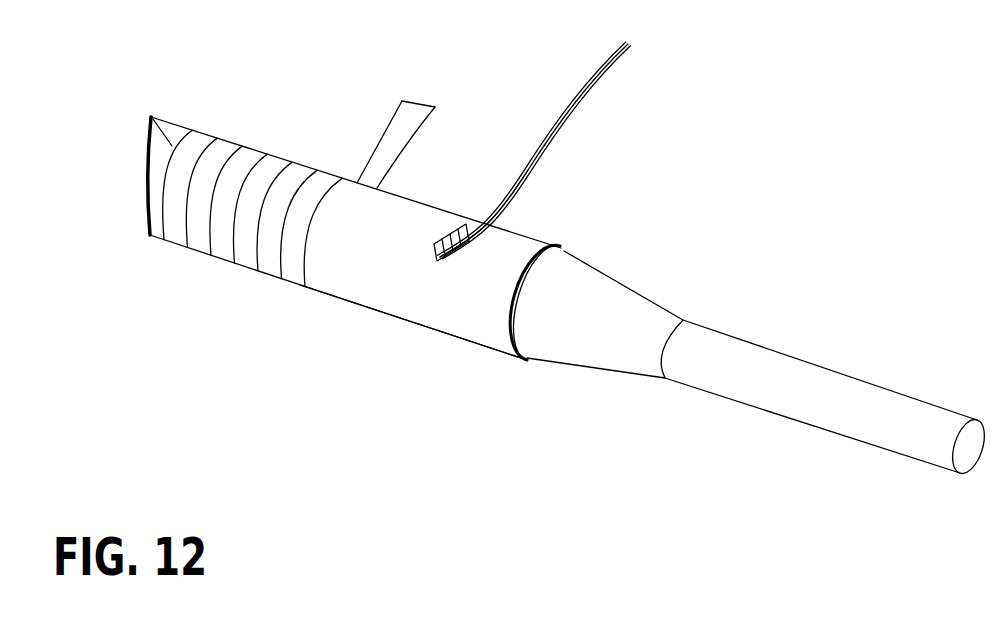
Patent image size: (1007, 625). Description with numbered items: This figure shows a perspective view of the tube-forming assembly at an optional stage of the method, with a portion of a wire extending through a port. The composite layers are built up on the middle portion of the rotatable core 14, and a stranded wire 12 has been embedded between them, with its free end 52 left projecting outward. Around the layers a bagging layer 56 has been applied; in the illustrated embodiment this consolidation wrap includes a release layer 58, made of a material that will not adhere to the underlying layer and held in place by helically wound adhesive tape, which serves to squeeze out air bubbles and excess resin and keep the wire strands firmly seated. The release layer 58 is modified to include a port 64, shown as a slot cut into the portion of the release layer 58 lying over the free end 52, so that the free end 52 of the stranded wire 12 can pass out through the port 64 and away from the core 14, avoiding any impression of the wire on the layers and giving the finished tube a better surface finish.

The stranded wire 12 is at (588, 82).
The core 14 is at (185, 128).
The free end 52 is at (526, 188).
The bagging layer 56 is at (218, 258).
The release layer 58 is at (343, 300).
The port 64 is at (463, 262).